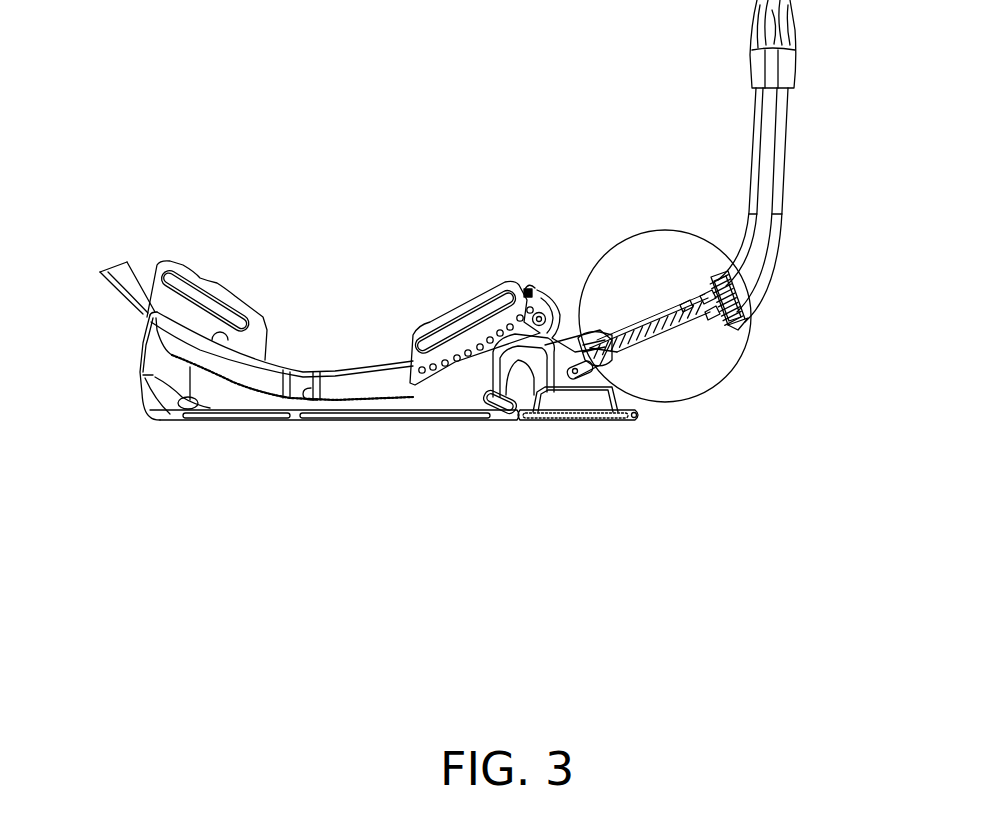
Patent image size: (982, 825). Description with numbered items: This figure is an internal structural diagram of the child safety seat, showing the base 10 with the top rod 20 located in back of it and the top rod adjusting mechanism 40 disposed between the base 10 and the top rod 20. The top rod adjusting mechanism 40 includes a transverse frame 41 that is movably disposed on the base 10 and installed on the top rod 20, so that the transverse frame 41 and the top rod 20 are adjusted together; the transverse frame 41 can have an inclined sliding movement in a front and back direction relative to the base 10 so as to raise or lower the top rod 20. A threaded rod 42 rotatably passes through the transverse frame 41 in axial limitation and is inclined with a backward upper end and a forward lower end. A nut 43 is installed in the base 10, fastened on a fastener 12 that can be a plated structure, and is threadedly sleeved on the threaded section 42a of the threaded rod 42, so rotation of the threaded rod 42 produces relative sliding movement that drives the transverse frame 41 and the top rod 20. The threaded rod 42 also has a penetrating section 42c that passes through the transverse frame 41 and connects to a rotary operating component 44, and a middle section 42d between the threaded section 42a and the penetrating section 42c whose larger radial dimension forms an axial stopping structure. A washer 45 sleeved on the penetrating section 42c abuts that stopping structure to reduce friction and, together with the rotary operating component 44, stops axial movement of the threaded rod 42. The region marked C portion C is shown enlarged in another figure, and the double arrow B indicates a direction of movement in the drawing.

The base 10 is at (349, 298).
The fastener 12 is at (578, 330).
The top rod 20 is at (792, 133).
The top rod adjusting mechanism 40 is at (686, 327).
The transverse frame 41 is at (717, 284).
The threaded rod 42 is at (710, 400).
The threaded section 42a is at (622, 358).
The penetrating section 42c is at (730, 320).
The middle section 42d is at (695, 320).
The nut 43 is at (602, 344).
The rotary operating component 44 is at (740, 312).
The washer 45 is at (703, 302).
The direction B is at (429, 447).
The C portion C is at (752, 336).